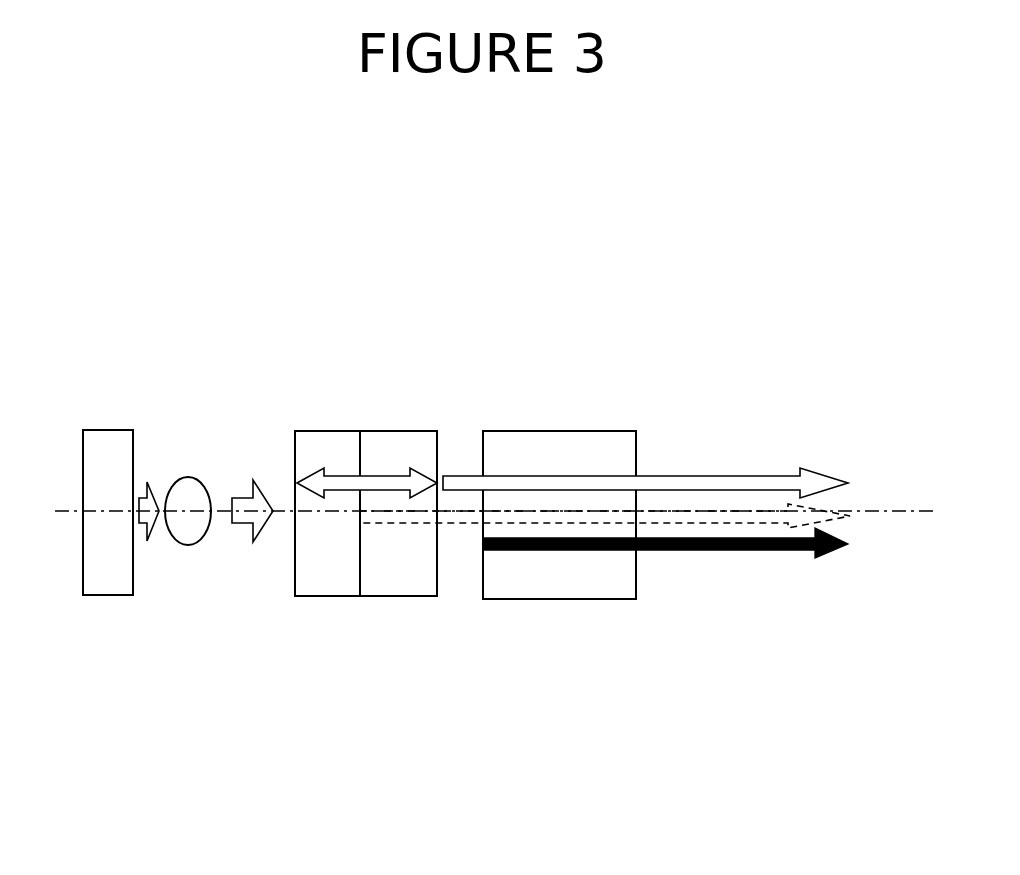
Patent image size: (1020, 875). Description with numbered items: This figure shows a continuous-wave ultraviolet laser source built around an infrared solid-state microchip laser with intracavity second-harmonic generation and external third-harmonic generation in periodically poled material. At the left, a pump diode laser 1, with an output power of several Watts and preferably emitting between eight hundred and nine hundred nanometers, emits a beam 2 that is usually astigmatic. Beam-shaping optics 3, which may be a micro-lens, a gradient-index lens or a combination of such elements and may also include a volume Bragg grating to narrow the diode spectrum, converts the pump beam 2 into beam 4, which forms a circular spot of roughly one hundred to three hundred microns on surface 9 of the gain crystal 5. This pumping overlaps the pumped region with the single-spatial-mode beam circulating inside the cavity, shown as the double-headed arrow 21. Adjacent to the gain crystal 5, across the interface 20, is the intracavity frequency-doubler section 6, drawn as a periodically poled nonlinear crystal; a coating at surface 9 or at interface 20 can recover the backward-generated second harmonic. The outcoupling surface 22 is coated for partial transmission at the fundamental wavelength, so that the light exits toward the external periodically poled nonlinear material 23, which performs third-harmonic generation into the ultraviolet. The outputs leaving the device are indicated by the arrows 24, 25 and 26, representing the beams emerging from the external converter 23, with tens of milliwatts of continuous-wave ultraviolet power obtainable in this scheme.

The pump diode laser 1 is at (107, 440).
The pump beam 2 is at (148, 472).
The beam-shaping optics 3 is at (189, 455).
The shaped pump beam 4 is at (256, 463).
The gain crystal 5 is at (340, 452).
The second zone of reaction vessel 6 is at (415, 452).
The surface of the gain crystal 9 is at (290, 575).
The interface 20 is at (353, 575).
The scattered light within vessel 21 is at (392, 483).
The outcoupling surface 22 is at (445, 572).
The periodically poled nonlinear material 23 is at (565, 455).
The transmitted light 24 is at (652, 470).
The scattered light 25 is at (622, 512).
The absorbed light signal 26 is at (672, 556).